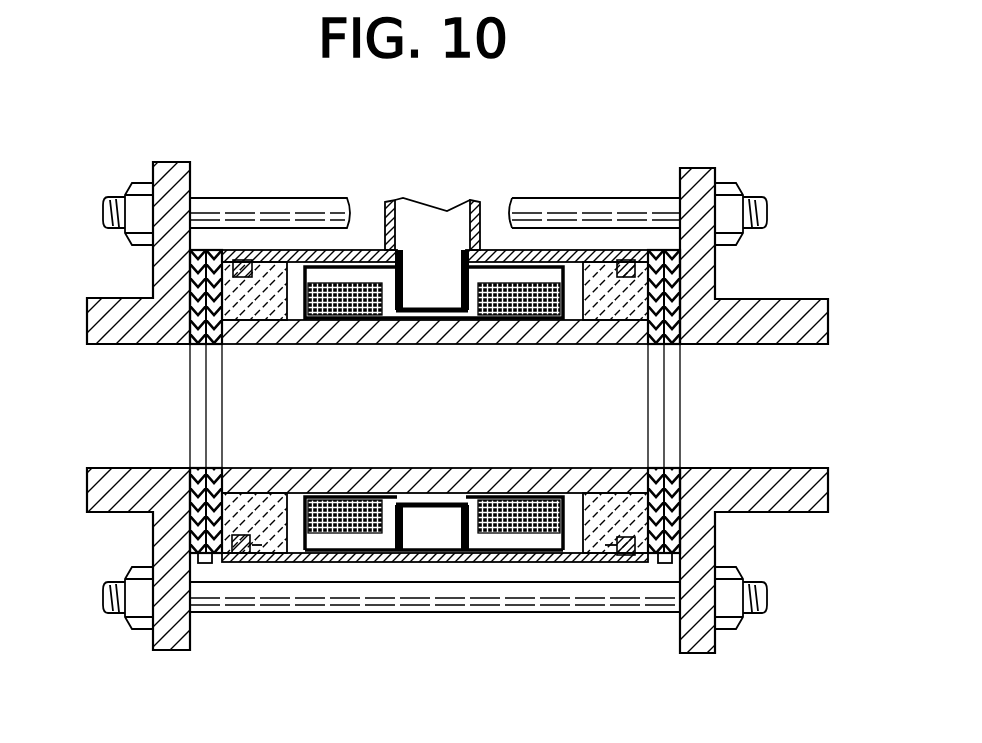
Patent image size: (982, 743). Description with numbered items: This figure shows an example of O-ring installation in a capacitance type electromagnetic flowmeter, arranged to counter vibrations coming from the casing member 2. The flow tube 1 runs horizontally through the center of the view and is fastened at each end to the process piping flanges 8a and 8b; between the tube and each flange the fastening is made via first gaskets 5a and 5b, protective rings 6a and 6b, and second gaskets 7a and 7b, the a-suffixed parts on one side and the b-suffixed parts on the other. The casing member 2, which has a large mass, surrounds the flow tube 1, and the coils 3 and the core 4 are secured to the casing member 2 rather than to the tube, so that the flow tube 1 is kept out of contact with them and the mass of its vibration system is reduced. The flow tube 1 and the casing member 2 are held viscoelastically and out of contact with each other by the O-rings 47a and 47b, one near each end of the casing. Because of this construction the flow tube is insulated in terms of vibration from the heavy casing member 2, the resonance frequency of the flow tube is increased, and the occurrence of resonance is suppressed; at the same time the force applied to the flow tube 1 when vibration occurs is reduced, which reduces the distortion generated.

The flow tube 1 is at (590, 307).
The casing member 2 is at (618, 272).
The coils 3 is at (345, 287).
The core 4 is at (416, 268).
The first gasket 5a is at (653, 563).
The first gasket 5b is at (240, 553).
The protective ring 6a is at (665, 565).
The protective ring 6b is at (218, 565).
The second gasket 7a is at (675, 517).
The second gasket 7b is at (196, 518).
The process piping flange 8a is at (698, 182).
The process piping flange 8b is at (172, 163).
The O-ring 47a is at (623, 563).
The O-ring 47b is at (253, 545).